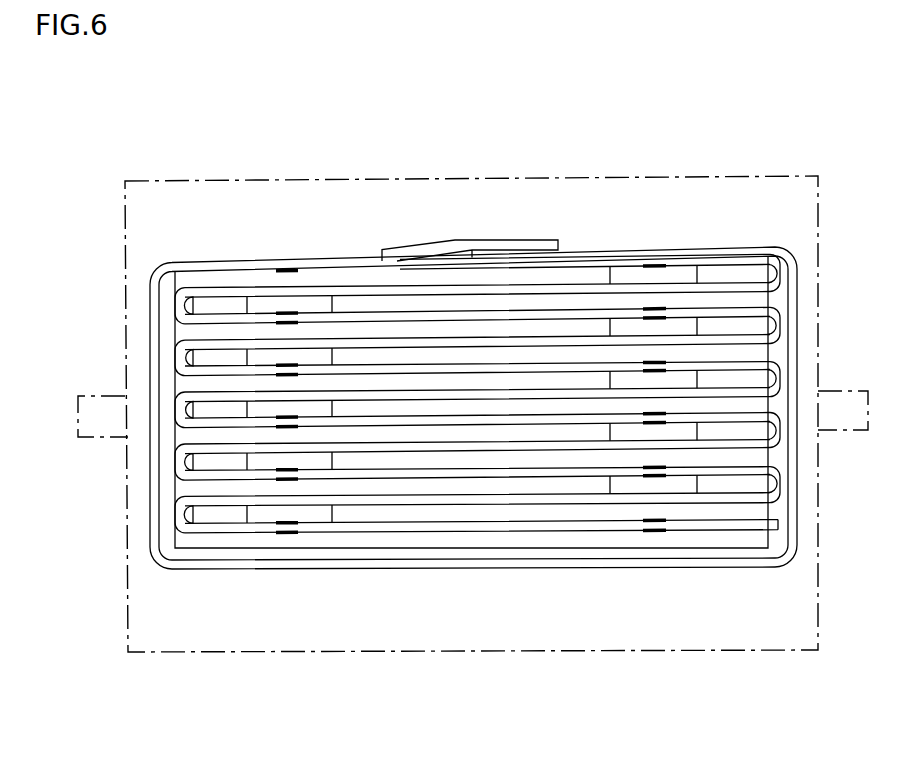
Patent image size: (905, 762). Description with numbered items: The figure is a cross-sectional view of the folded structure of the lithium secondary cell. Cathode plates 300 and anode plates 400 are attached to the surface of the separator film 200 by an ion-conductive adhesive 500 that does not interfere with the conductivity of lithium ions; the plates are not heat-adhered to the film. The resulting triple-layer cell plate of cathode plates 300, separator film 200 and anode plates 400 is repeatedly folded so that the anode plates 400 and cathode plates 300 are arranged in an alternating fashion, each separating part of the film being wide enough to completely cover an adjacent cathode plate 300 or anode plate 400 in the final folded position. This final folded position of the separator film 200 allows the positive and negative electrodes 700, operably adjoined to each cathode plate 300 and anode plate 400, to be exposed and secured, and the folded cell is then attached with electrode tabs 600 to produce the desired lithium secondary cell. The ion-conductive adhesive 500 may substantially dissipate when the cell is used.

The separator film 200 is at (716, 568).
The cathode plate 300 is at (400, 514).
The anode plate 400 is at (338, 276).
The ion-conductive adhesive 500 is at (288, 537).
The electrode tab 600 is at (500, 240).
The positive and negative electrodes 700 is at (640, 548).